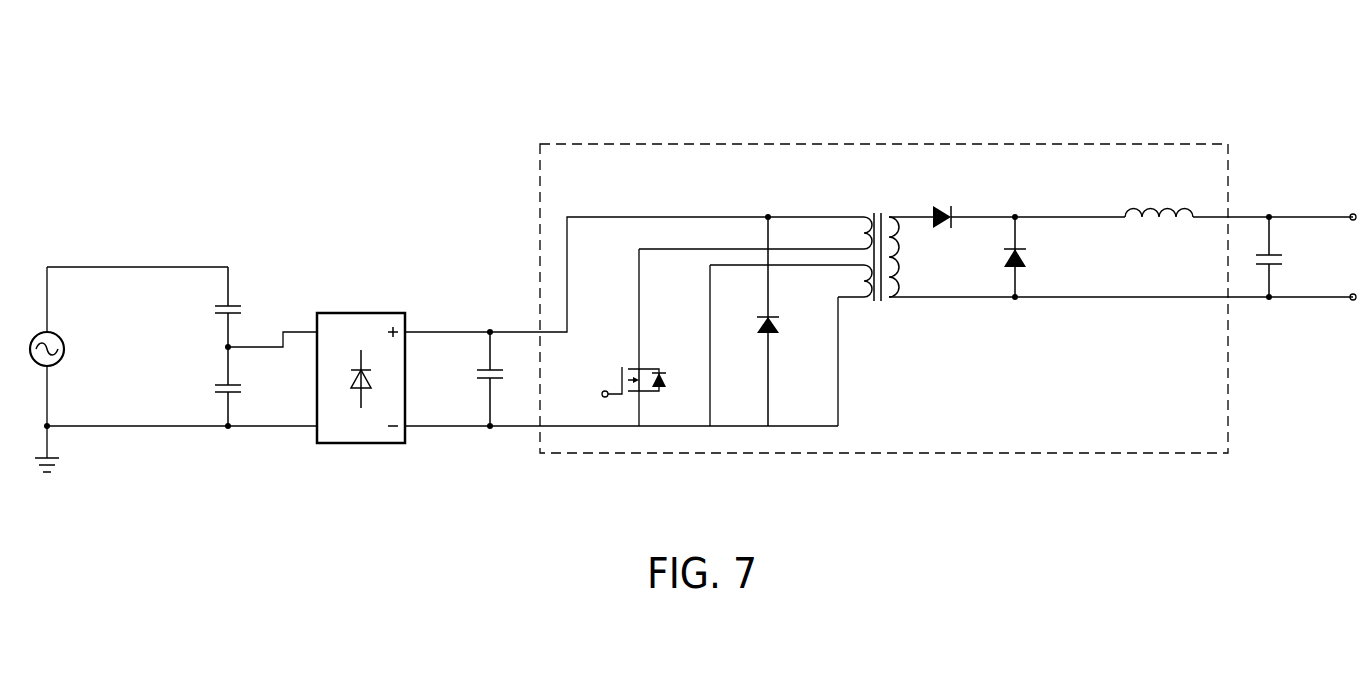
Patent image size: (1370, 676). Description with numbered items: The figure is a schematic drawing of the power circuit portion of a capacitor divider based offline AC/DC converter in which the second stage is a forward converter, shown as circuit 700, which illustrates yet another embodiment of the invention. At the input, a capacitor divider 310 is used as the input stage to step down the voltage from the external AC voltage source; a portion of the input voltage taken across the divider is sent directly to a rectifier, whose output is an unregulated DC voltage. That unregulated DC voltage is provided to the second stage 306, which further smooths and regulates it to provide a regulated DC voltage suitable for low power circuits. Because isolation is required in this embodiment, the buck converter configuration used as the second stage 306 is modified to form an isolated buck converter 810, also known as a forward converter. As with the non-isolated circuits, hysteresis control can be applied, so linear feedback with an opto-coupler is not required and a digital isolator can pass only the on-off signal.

The circuit 700 is at (404, 74).
The capacitor divider 310 is at (228, 250).
The second stage 306 is at (1066, 143).
The isolated buck converter 810 is at (941, 383).